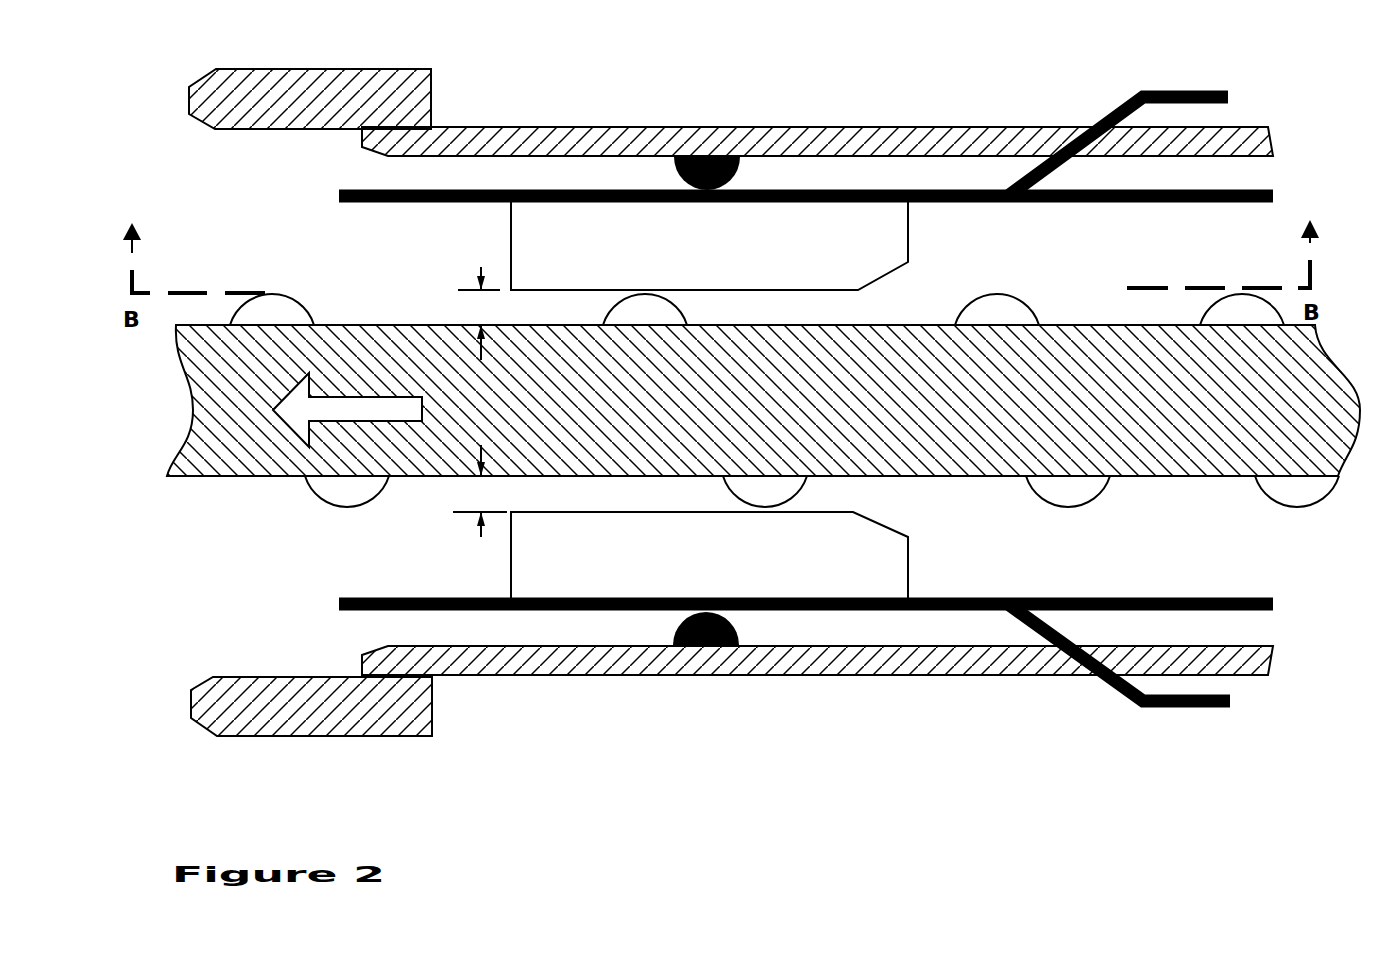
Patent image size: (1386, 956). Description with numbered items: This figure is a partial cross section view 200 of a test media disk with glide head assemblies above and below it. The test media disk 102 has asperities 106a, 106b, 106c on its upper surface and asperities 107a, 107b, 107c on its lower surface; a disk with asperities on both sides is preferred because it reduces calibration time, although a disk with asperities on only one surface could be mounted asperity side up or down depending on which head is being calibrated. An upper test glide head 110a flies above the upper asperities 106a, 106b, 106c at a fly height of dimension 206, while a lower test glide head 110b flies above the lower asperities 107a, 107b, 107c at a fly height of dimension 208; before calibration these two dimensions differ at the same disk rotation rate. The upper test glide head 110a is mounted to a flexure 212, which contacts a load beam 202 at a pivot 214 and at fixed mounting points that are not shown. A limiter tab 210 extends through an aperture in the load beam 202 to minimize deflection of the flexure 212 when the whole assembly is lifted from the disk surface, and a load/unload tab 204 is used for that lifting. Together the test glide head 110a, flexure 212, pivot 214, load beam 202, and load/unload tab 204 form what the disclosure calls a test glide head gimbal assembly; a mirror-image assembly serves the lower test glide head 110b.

The partial cross section view 200 is at (878, 85).
The load beam 202 is at (505, 135).
The load/unload tab 204 is at (415, 95).
The fly height dimension 206 is at (480, 327).
The fly height dimension 208 is at (480, 478).
The limiter tab 210 is at (1207, 90).
The flexure 212 is at (338, 193).
The pivot 214 is at (710, 155).
The test media disk 102 is at (740, 421).
The asperity 106a is at (312, 307).
The asperity 106b is at (680, 308).
The asperity 106c is at (1013, 300).
The asperity 107a is at (322, 507).
The asperity 107b is at (722, 483).
The asperity 107c is at (1085, 507).
The upper test glide head 110a is at (738, 254).
The lower test glide head 110b is at (740, 566).